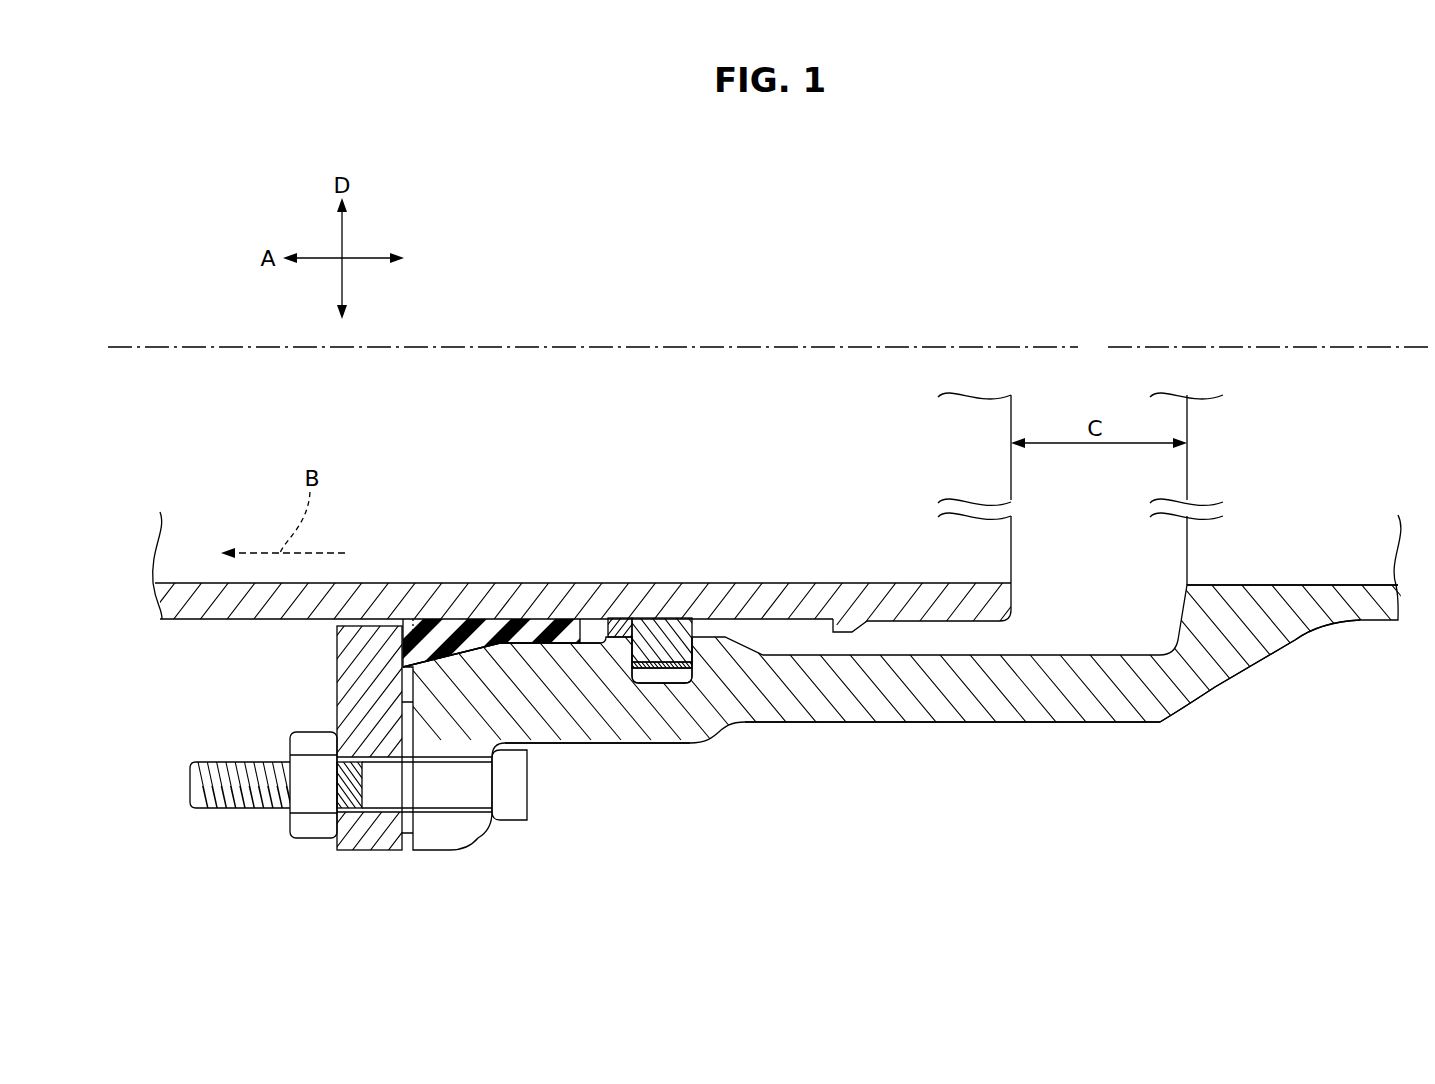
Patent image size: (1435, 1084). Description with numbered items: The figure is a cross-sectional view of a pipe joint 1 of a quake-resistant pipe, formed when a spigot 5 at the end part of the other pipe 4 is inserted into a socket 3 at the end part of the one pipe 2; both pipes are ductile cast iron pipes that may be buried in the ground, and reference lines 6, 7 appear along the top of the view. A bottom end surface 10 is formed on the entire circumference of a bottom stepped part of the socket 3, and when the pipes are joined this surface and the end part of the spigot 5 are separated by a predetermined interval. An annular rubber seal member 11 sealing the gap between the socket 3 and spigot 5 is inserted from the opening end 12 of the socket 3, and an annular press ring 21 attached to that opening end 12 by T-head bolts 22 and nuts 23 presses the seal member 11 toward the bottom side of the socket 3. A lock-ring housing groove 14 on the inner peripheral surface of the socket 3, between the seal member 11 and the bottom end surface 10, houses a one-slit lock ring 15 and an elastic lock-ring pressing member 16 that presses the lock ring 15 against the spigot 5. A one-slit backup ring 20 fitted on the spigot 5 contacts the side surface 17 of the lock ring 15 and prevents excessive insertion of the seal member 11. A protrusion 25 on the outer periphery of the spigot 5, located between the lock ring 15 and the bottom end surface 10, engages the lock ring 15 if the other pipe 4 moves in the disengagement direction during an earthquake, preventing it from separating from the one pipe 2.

The pipe joint 1 is at (950, 740).
The one pipe 2 is at (1385, 640).
The socket 3 is at (845, 724).
The other pipe 4 is at (200, 628).
The spigot 5 is at (990, 633).
The reference line 6 is at (1376, 345).
The reference line 7 is at (195, 345).
The bottom end surface 10 is at (1178, 617).
The seal member 11 is at (525, 632).
The opening end 12 is at (403, 638).
The lock-ring housing groove 14 is at (655, 678).
The lock ring 15 is at (666, 632).
The lock-ring pressing member 16 is at (692, 684).
The side surface 17 is at (628, 646).
The backup ring 20 is at (621, 636).
The press ring 21 is at (352, 840).
The T-head bolt 22 is at (515, 808).
The nut 23 is at (308, 832).
The protrusion 25 is at (838, 632).